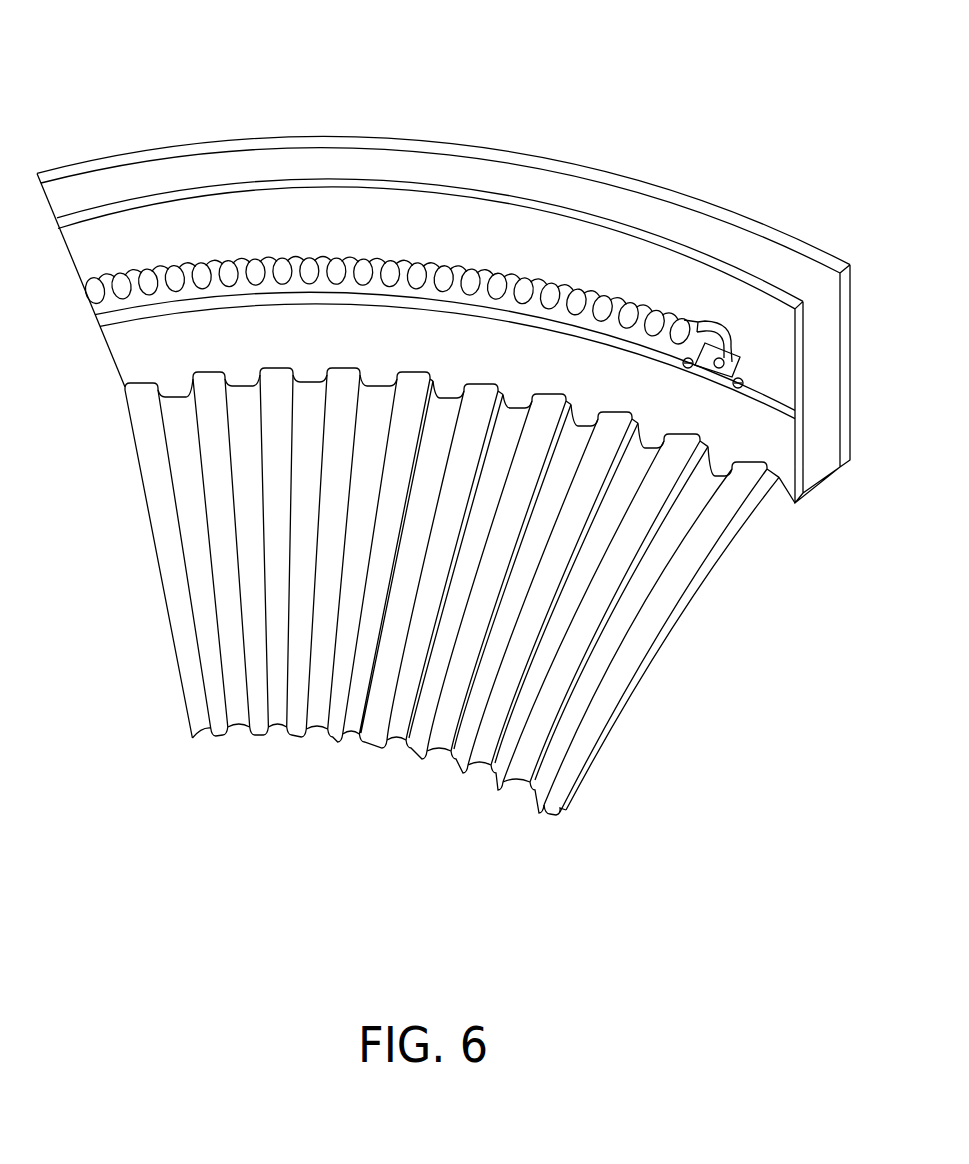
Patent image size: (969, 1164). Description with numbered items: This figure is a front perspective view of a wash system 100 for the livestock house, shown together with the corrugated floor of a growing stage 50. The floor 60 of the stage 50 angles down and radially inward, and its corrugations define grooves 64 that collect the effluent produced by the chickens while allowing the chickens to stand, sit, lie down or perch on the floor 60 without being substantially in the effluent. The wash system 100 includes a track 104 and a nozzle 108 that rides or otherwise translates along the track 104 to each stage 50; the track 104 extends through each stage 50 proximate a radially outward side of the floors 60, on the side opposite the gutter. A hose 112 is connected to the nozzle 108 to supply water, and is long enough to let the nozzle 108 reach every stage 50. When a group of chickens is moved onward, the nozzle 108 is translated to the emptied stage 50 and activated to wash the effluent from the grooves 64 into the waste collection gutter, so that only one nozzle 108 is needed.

The wash system 100 is at (160, 107).
The track 104 is at (558, 323).
The nozzle 108 is at (737, 353).
The hose 112 is at (455, 263).
The growing stage 50 is at (473, 610).
The floor 60 is at (578, 767).
The groove 64 is at (373, 743).